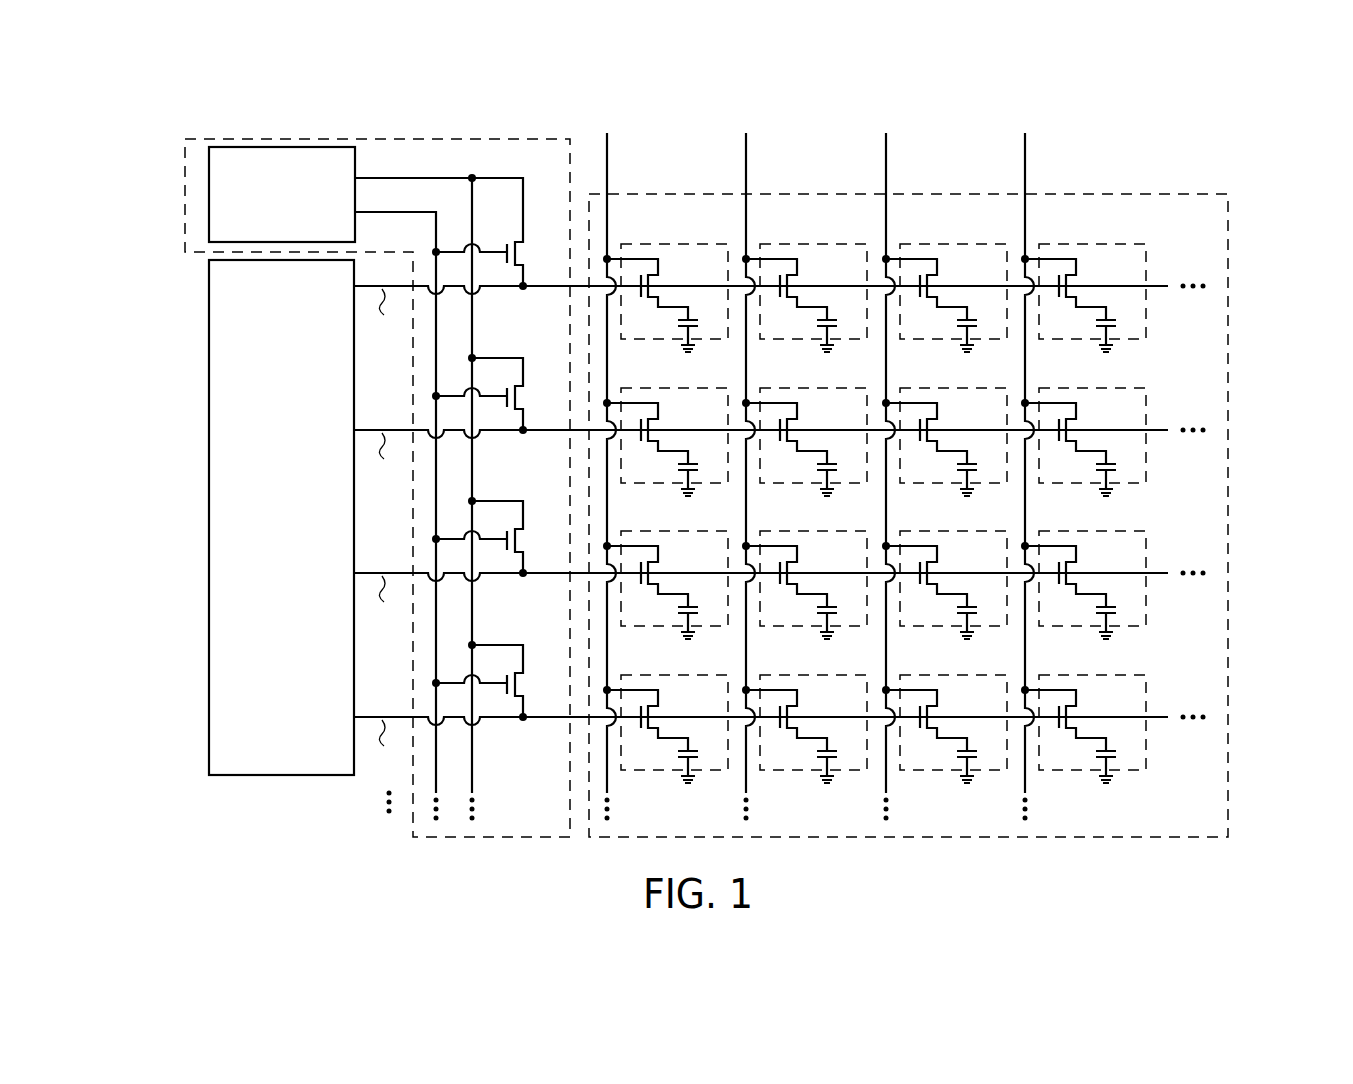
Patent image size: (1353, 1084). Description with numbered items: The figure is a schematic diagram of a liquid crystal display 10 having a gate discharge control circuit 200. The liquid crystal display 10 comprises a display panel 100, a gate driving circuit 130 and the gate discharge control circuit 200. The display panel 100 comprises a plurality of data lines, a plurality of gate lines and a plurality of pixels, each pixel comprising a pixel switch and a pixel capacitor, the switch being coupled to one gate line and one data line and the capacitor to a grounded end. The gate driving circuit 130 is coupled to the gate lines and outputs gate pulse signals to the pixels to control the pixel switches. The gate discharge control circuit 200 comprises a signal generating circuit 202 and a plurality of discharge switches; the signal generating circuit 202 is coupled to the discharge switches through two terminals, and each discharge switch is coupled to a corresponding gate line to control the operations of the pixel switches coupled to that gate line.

The liquid crystal display 10 is at (714, 456).
The display panel 100 is at (1190, 194).
The gate driving circuit 130 is at (208, 442).
The gate discharge control circuit 200 is at (500, 139).
The signal generating circuit 202 is at (208, 190).